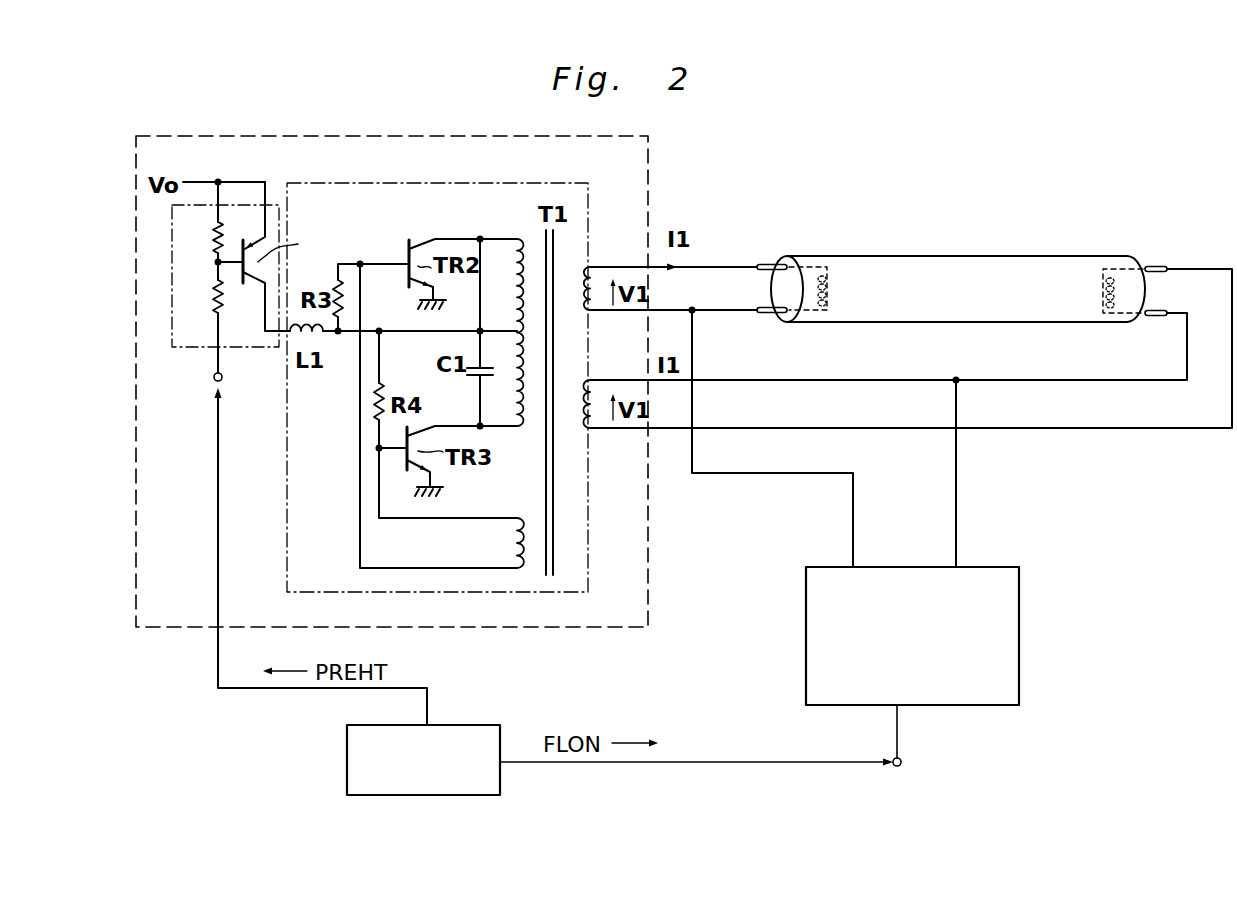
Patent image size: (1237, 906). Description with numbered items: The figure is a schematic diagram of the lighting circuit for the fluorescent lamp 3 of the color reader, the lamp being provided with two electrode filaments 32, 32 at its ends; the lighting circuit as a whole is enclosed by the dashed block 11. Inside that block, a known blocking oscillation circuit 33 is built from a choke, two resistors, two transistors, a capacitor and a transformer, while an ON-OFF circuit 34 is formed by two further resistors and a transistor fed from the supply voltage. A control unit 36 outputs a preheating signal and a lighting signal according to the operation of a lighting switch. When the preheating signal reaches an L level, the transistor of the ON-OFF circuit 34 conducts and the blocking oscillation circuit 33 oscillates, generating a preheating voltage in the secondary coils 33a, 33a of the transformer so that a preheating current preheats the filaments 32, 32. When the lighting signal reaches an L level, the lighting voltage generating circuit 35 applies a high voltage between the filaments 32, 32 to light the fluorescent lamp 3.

The lamp lighting device / inverter unit 11 is at (651, 163).
The fluorescent lamp 3 is at (978, 260).
The filament 32 is at (824, 286).
The blocking oscillation circuit 33 is at (578, 591).
The secondary coil 33a is at (590, 267).
The ON-OFF circuit 34 is at (176, 351).
The lighting voltage generating circuit 35 is at (1012, 632).
The control unit 36 is at (461, 727).